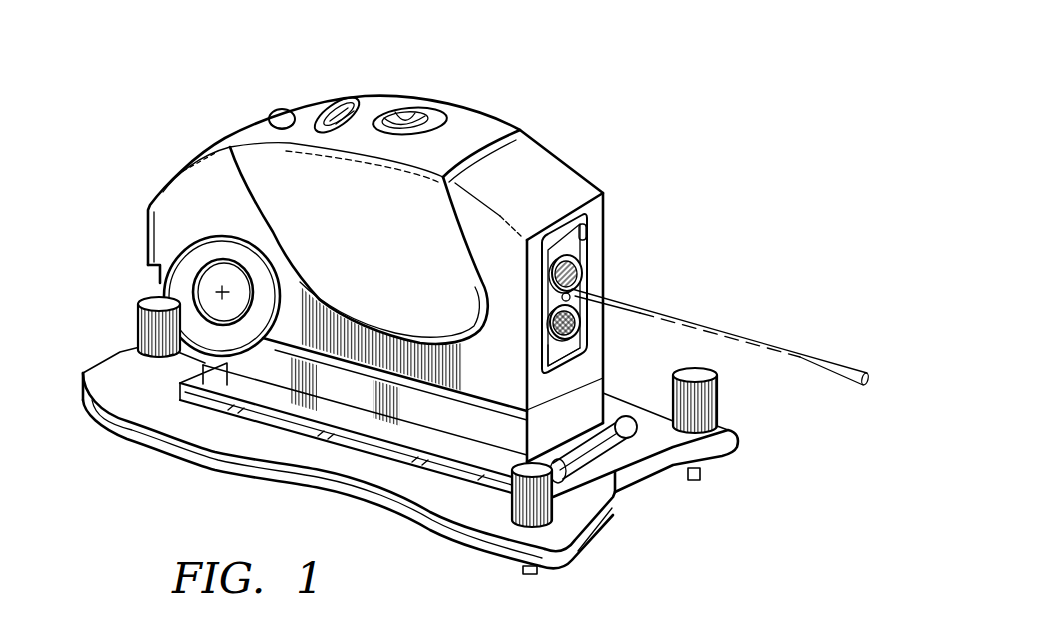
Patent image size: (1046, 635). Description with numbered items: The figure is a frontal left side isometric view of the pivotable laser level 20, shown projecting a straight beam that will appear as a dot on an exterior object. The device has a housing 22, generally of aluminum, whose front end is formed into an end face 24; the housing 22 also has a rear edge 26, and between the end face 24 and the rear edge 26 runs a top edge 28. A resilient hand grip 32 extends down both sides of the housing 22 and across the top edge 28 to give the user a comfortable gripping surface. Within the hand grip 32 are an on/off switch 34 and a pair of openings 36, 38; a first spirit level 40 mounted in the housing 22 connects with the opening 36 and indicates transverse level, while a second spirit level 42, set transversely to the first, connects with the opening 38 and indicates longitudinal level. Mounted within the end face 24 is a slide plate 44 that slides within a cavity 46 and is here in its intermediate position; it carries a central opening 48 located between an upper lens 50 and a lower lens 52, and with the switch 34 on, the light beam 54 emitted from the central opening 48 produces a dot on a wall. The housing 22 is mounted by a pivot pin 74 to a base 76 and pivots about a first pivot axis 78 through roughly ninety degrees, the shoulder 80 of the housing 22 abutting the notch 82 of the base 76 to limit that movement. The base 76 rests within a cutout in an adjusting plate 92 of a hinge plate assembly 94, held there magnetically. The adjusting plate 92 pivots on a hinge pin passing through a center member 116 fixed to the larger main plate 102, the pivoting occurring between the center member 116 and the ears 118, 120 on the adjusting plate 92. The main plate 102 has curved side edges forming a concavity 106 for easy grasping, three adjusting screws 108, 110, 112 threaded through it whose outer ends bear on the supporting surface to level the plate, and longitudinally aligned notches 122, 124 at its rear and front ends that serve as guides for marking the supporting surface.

The pivotable laser level 20 is at (457, 318).
The housing 22 is at (177, 223).
The end face 24 is at (600, 210).
The rear edge 26 is at (150, 205).
The top edge 28 is at (505, 155).
The hand grip 32 is at (363, 257).
The on/off switch 34 is at (280, 108).
The opening 36 is at (330, 108).
The opening 38 is at (397, 110).
The first spirit level 40 is at (345, 102).
The second spirit level 42 is at (421, 115).
The slide plate 44 is at (547, 354).
The cavity 46 is at (590, 240).
The central opening 48 is at (572, 296).
The upper lens 50 is at (582, 262).
The lower lens 52 is at (578, 330).
The light beam 54 is at (817, 363).
The pivot pin 74 is at (192, 278).
The base 76 is at (550, 420).
The first pivot axis 78 is at (214, 268).
The shoulder 80 is at (155, 284).
The notch 82 is at (212, 368).
The adjusting plate 92 is at (290, 420).
The hinge plate assembly 94 is at (410, 483).
The main plate 102 is at (567, 548).
The concavity 106 is at (400, 517).
The adjusting screw 108 is at (140, 320).
The adjusting screw 110 is at (512, 500).
The adjusting screw 112 is at (708, 393).
The center member 116 is at (637, 443).
The ear 118 is at (578, 488).
The ear 120 is at (626, 422).
The notch 122 is at (135, 349).
The notch 124 is at (627, 492).